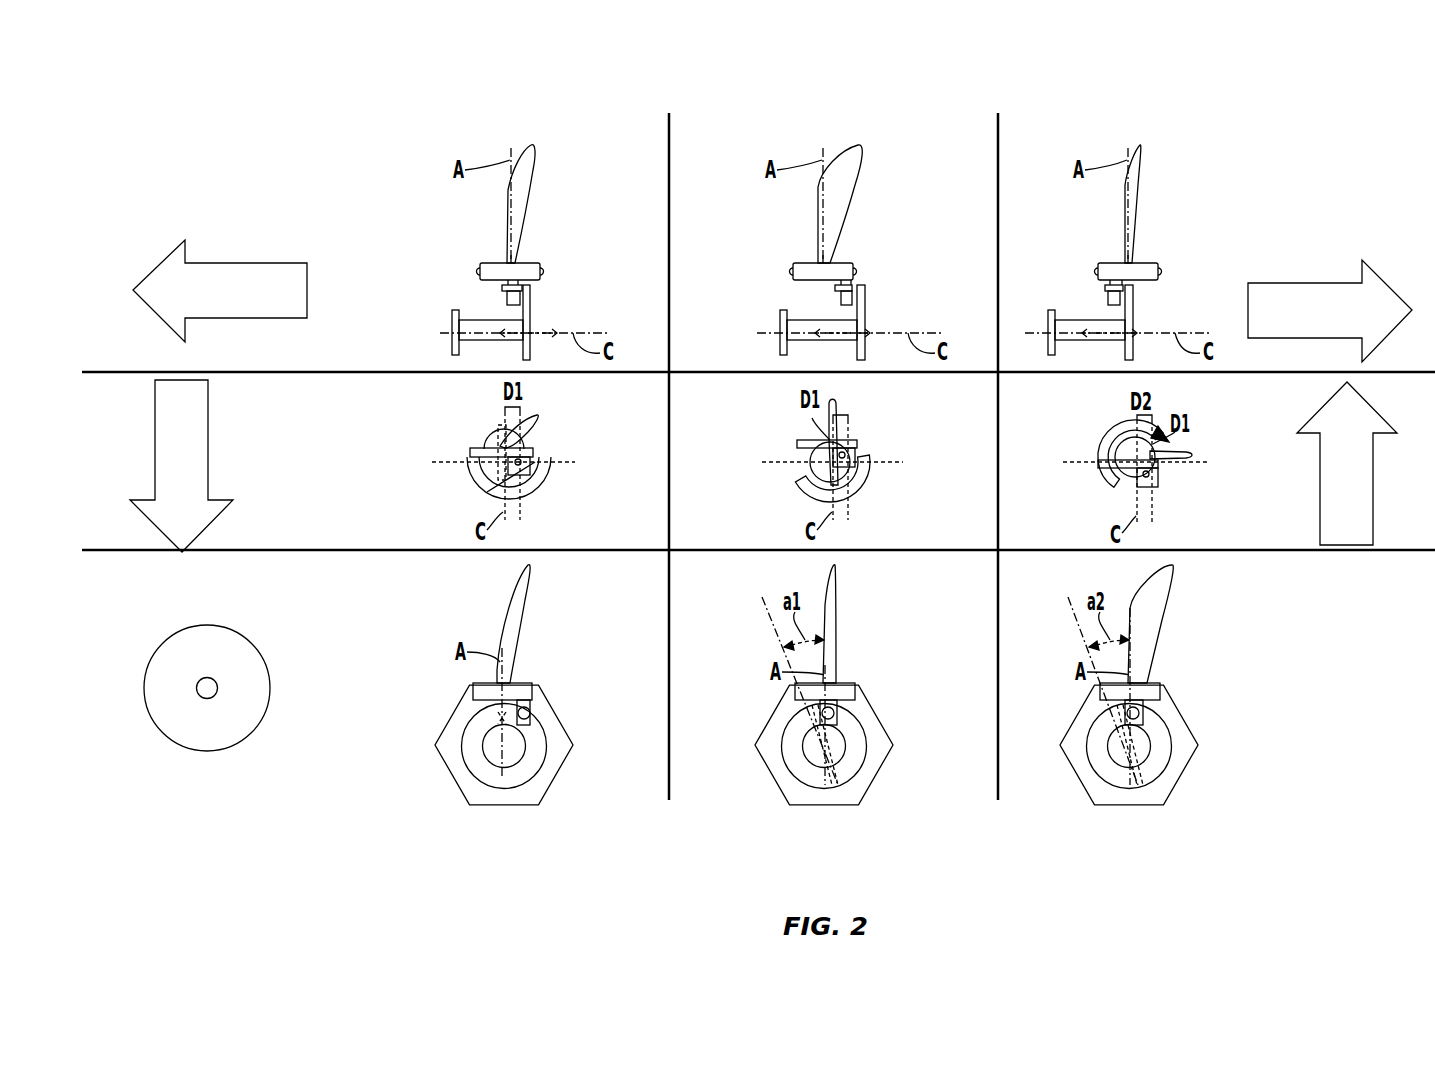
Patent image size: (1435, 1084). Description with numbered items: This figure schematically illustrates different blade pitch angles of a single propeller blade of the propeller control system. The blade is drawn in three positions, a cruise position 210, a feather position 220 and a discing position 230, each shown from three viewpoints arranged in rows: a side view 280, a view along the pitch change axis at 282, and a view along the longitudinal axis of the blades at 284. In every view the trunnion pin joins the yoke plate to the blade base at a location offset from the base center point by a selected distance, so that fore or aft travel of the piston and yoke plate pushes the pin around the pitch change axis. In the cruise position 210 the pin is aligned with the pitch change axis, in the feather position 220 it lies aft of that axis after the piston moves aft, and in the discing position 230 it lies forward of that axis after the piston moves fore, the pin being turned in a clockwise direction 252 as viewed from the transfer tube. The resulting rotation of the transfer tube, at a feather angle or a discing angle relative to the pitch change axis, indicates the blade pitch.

The cruise position 210 is at (581, 139).
The feather position 220 is at (913, 139).
The discing position 230 is at (1201, 139).
The clockwise direction 252 is at (1113, 492).
The side view 280 is at (112, 256).
The pitch change axis view 282 is at (112, 469).
The longitudinal axis view 284 is at (112, 646).